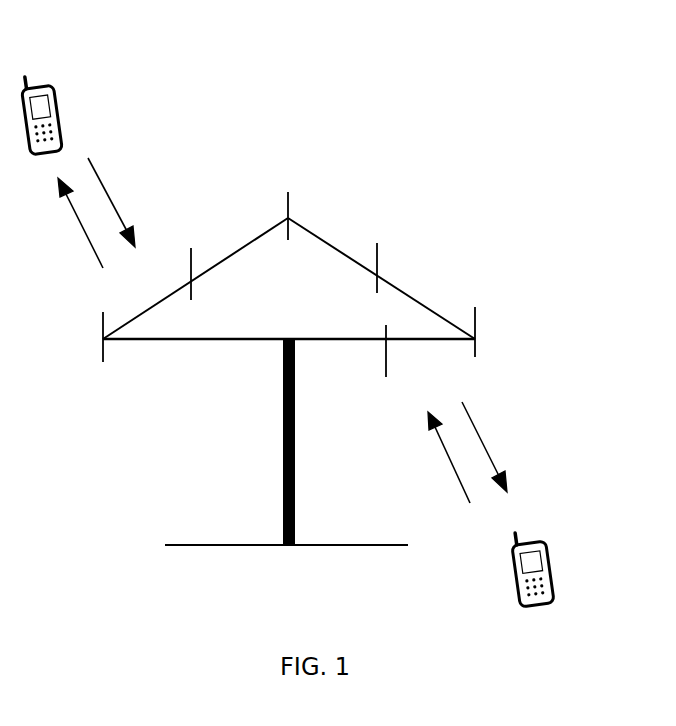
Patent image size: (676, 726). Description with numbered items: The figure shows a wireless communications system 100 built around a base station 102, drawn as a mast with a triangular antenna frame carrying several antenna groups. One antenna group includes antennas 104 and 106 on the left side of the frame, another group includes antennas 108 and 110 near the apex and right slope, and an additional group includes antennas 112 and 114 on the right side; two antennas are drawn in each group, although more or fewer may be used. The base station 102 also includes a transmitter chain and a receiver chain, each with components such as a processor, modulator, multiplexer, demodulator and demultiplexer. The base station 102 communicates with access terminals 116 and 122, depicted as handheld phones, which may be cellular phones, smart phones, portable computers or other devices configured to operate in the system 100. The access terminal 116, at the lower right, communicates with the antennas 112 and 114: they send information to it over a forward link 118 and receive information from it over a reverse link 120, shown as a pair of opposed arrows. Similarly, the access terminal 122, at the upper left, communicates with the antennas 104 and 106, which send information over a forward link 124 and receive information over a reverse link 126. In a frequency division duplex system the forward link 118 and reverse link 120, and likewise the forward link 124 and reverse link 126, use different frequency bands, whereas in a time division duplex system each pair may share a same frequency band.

The wireless communications system 100 is at (428, 95).
The base station 102 is at (295, 487).
The antenna 104 is at (104, 348).
The antenna 106 is at (192, 284).
The antenna 108 is at (290, 205).
The antenna 110 is at (379, 258).
The antenna 112 is at (476, 320).
The antenna 114 is at (387, 363).
The access terminal 116 is at (555, 558).
The forward link 118 is at (477, 425).
The reverse link 120 is at (462, 482).
The access terminal 122 is at (62, 101).
The forward link 124 is at (83, 232).
The reverse link 126 is at (105, 181).